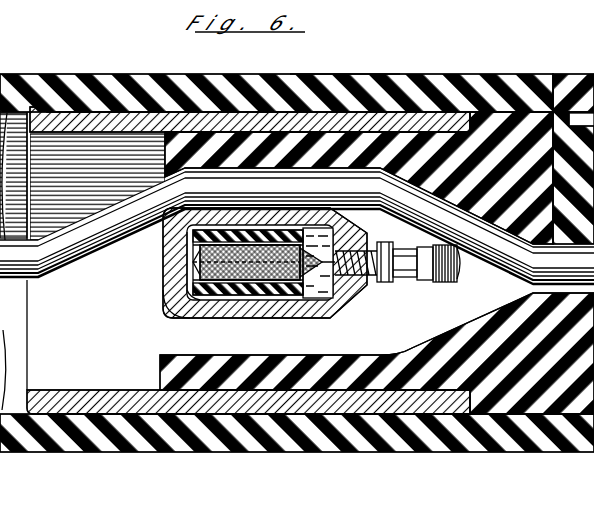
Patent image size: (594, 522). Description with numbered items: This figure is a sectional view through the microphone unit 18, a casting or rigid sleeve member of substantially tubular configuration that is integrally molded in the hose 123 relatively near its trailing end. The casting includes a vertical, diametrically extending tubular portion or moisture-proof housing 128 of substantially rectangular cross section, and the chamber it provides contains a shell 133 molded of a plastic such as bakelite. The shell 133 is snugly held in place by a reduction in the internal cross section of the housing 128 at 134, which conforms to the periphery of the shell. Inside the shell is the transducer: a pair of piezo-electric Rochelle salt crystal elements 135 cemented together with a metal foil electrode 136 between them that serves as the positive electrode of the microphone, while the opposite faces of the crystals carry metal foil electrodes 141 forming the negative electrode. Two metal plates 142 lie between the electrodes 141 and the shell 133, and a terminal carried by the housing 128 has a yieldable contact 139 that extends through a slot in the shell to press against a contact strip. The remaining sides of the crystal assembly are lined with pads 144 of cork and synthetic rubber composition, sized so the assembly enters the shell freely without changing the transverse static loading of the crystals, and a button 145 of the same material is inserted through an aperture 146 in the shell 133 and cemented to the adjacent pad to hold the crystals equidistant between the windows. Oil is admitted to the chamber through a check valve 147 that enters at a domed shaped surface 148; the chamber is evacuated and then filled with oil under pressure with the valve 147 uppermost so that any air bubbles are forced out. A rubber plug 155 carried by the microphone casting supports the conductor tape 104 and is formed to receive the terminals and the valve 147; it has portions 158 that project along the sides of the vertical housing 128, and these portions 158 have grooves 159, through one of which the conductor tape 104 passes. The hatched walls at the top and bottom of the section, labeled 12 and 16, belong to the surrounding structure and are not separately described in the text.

The housing 12 is at (52, 74).
The end wall 16 is at (447, 74).
The microphone unit 18 is at (82, 261).
The conductor tape 104 is at (297, 228).
The hose 123 is at (326, 74).
The moisture-proof housing 128 is at (168, 267).
The shell 133 is at (221, 298).
The reduction in internal cross section 134 is at (172, 305).
The piezo-electric crystal elements 135 is at (190, 262).
The electrode 136 is at (300, 292).
The yieldable contact 139 is at (370, 272).
The metal foil electrodes 141 is at (264, 230).
The plates 142 is at (228, 230).
The pads 144 is at (200, 232).
The button 145 is at (190, 272).
The aperture 146 is at (172, 297).
The check valve 147 is at (453, 255).
The domed shaped surface 148 is at (330, 290).
The rubber plug 155 is at (555, 118).
The portions 158 is at (155, 150).
The grooves 159 is at (220, 165).